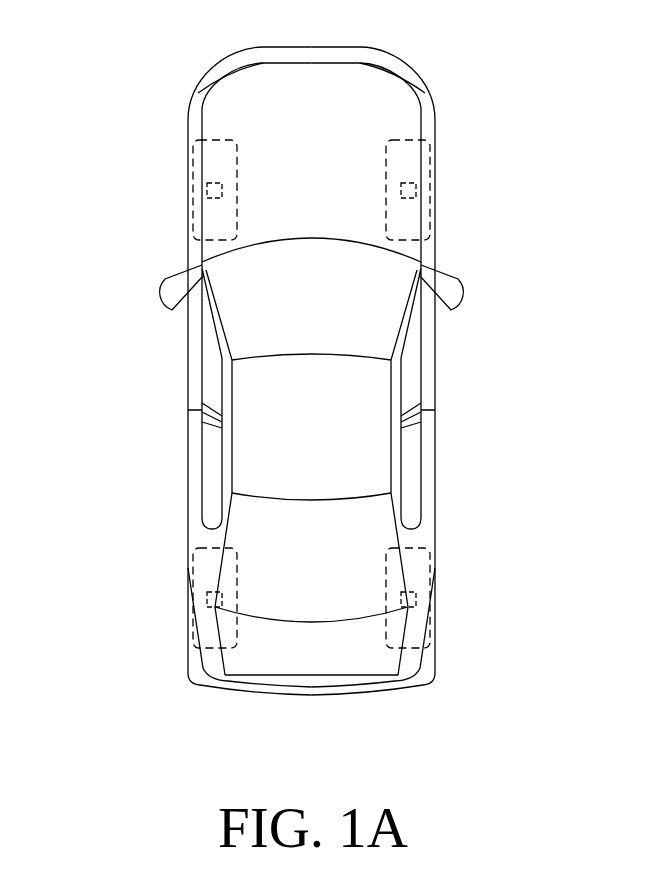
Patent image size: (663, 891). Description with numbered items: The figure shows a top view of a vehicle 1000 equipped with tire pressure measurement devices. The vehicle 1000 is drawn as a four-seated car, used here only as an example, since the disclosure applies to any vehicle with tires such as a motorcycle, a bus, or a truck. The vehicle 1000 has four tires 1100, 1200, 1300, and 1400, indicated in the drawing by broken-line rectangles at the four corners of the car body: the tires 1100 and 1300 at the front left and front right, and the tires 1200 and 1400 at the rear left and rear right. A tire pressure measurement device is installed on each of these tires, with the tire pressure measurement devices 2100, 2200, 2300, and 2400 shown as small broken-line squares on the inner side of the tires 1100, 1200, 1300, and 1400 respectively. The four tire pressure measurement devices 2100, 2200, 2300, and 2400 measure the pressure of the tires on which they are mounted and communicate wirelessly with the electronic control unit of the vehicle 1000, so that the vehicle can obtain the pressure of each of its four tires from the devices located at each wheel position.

The vehicle 1000 is at (176, 88).
The tire 1100 is at (207, 166).
The tire 1200 is at (207, 575).
The tire 1300 is at (418, 165).
The tire 1400 is at (416, 575).
The tire pressure measurement device 2100 is at (207, 191).
The tire pressure measurement device 2200 is at (207, 598).
The tire pressure measurement device 2300 is at (418, 191).
The tire pressure measurement device 2400 is at (418, 598).